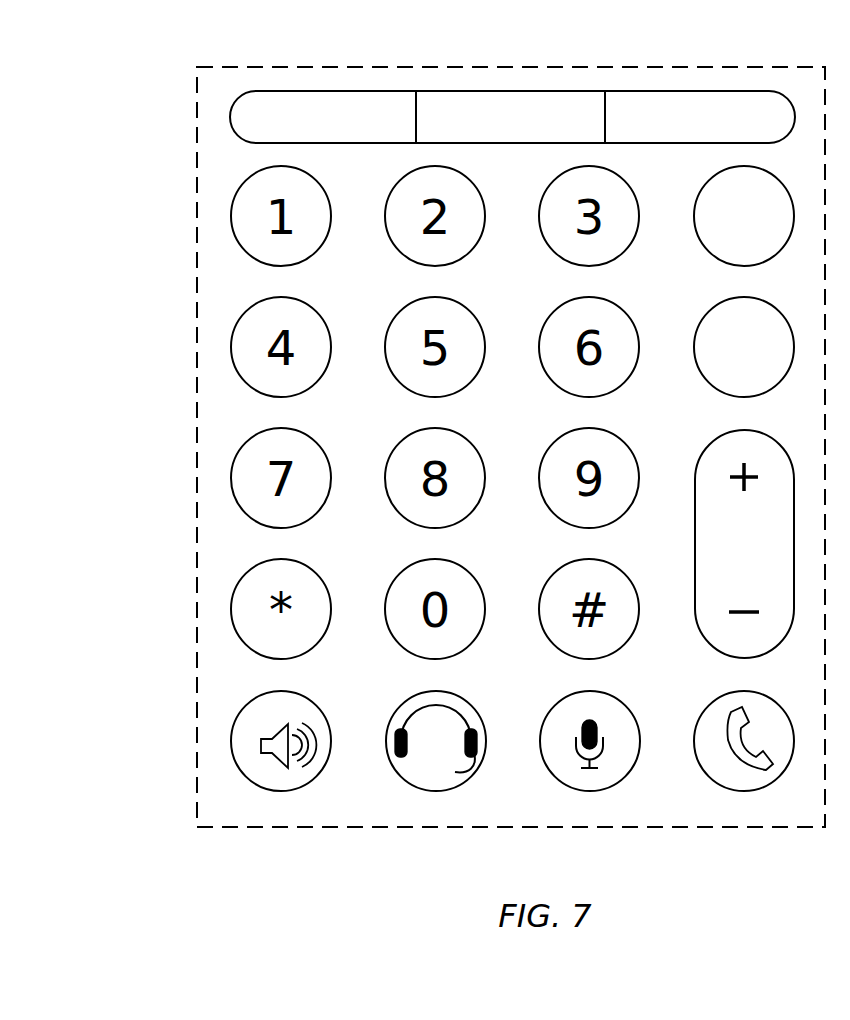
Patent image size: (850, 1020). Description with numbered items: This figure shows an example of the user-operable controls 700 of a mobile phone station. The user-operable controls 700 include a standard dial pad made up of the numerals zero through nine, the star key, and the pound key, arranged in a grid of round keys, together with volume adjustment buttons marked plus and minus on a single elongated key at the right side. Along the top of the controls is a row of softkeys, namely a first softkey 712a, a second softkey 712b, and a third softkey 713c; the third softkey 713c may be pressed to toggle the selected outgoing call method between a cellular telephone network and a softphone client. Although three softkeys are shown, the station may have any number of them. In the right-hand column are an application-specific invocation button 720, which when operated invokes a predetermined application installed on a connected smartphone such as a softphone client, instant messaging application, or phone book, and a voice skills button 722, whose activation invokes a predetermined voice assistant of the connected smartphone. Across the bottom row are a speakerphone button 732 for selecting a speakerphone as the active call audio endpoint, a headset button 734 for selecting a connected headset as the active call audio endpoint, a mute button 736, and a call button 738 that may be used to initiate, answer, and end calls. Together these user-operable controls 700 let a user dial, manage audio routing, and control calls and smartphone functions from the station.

The user-operable controls 700 is at (72, 73).
The first softkey 712a is at (323, 117).
The second softkey 712b is at (510, 117).
The third softkey 713c is at (700, 117).
The voice skills button 722 is at (699, 241).
The application-specific invocation button 720 is at (703, 383).
The speakerphone button 732 is at (244, 775).
The headset button 734 is at (392, 768).
The mute button 736 is at (553, 777).
The call button 738 is at (701, 768).